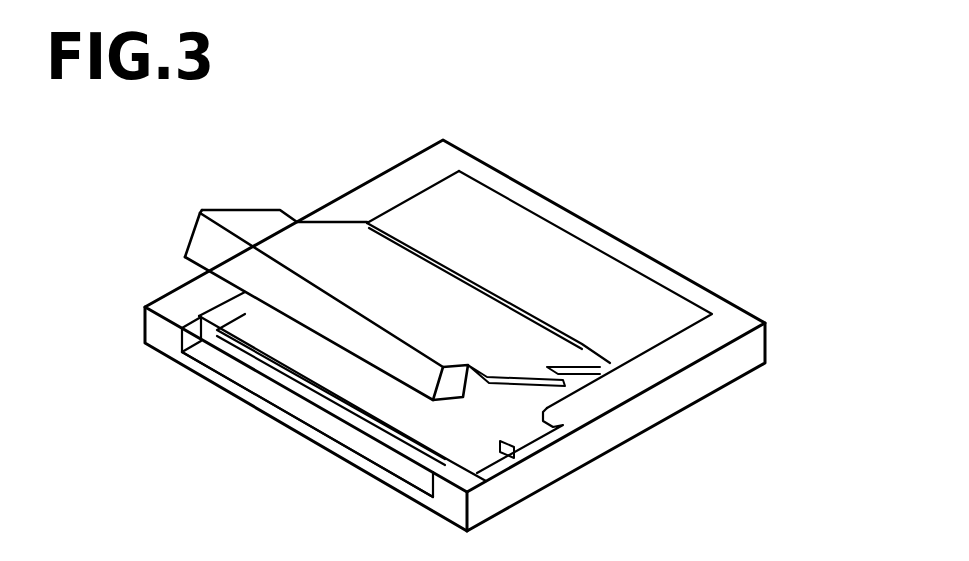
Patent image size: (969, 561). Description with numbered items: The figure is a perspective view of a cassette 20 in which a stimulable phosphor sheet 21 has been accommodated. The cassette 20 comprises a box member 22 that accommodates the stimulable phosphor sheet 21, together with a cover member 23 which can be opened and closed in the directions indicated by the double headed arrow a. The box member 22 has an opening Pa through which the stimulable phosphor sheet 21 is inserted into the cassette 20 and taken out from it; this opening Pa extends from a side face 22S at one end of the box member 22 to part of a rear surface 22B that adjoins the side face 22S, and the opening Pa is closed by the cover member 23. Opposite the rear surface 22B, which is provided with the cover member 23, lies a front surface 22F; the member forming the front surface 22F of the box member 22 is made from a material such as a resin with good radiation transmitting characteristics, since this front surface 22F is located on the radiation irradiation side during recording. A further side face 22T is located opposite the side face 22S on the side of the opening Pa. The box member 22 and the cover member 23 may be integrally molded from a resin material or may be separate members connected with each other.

The cassette 20 is at (365, 100).
The stimulable phosphor sheet 21 is at (388, 407).
The box member 22 is at (674, 280).
The side face 22T is at (750, 307).
The rear surface 22B is at (491, 205).
The front surface 22F is at (615, 452).
The side face 22S is at (285, 415).
The cover member 23 is at (346, 240).
The opening Pa is at (185, 377).
The double headed arrow a is at (432, 398).